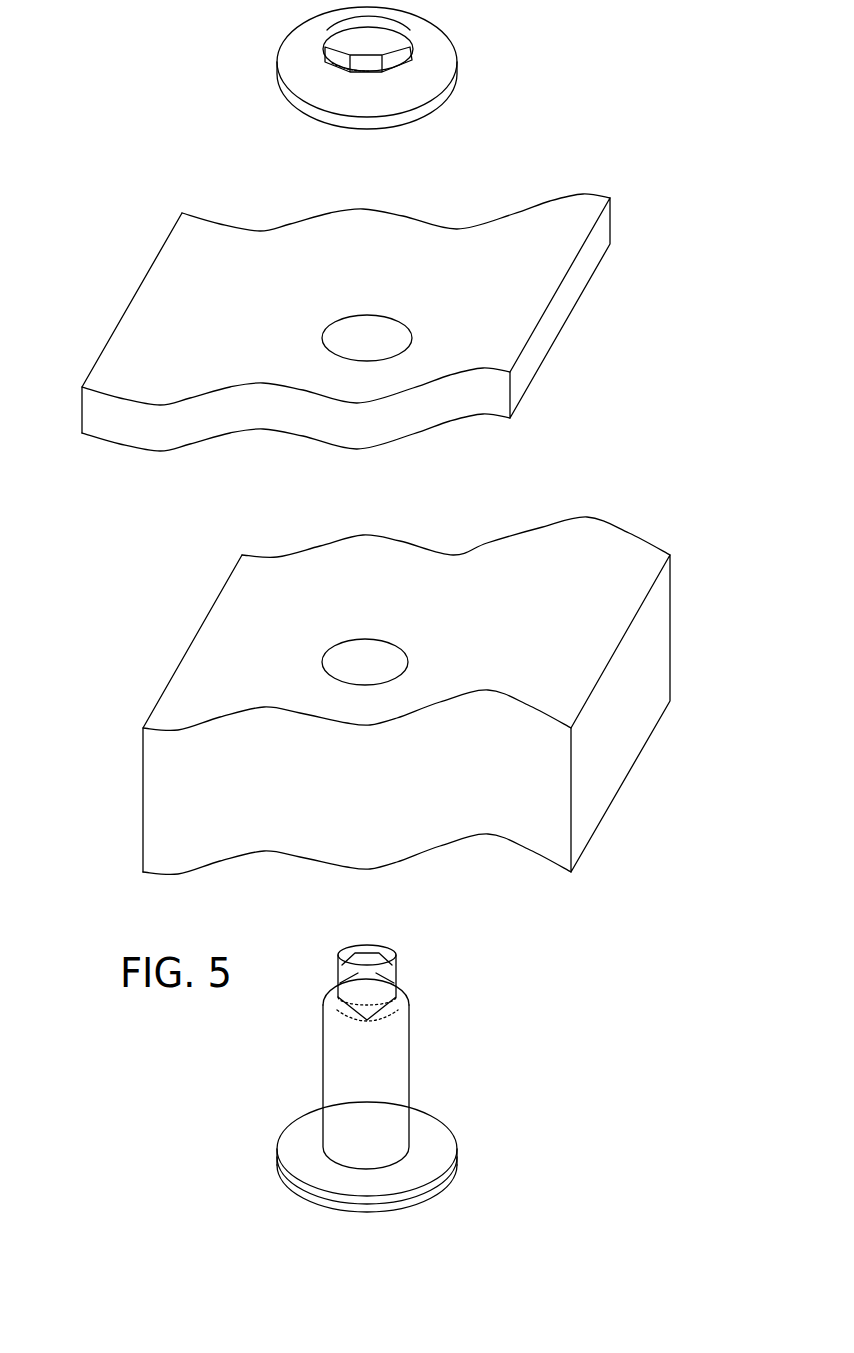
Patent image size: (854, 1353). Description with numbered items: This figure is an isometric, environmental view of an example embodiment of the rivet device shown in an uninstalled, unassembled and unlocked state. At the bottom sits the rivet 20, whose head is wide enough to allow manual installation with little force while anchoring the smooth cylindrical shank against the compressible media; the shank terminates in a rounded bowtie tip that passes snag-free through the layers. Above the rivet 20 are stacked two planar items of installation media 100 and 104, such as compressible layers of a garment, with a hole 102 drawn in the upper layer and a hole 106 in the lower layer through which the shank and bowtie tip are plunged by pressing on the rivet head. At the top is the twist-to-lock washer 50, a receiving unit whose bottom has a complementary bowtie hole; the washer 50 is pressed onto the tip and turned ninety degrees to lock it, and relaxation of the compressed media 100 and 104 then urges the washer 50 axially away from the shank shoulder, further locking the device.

The rivet 20 is at (458, 1075).
The twist-to-lock washer 50 is at (478, 80).
The installation media 100 is at (530, 247).
The hole in first plate 102 is at (357, 333).
The installation media 104 is at (267, 673).
The installed and locked fastener 106 is at (368, 667).